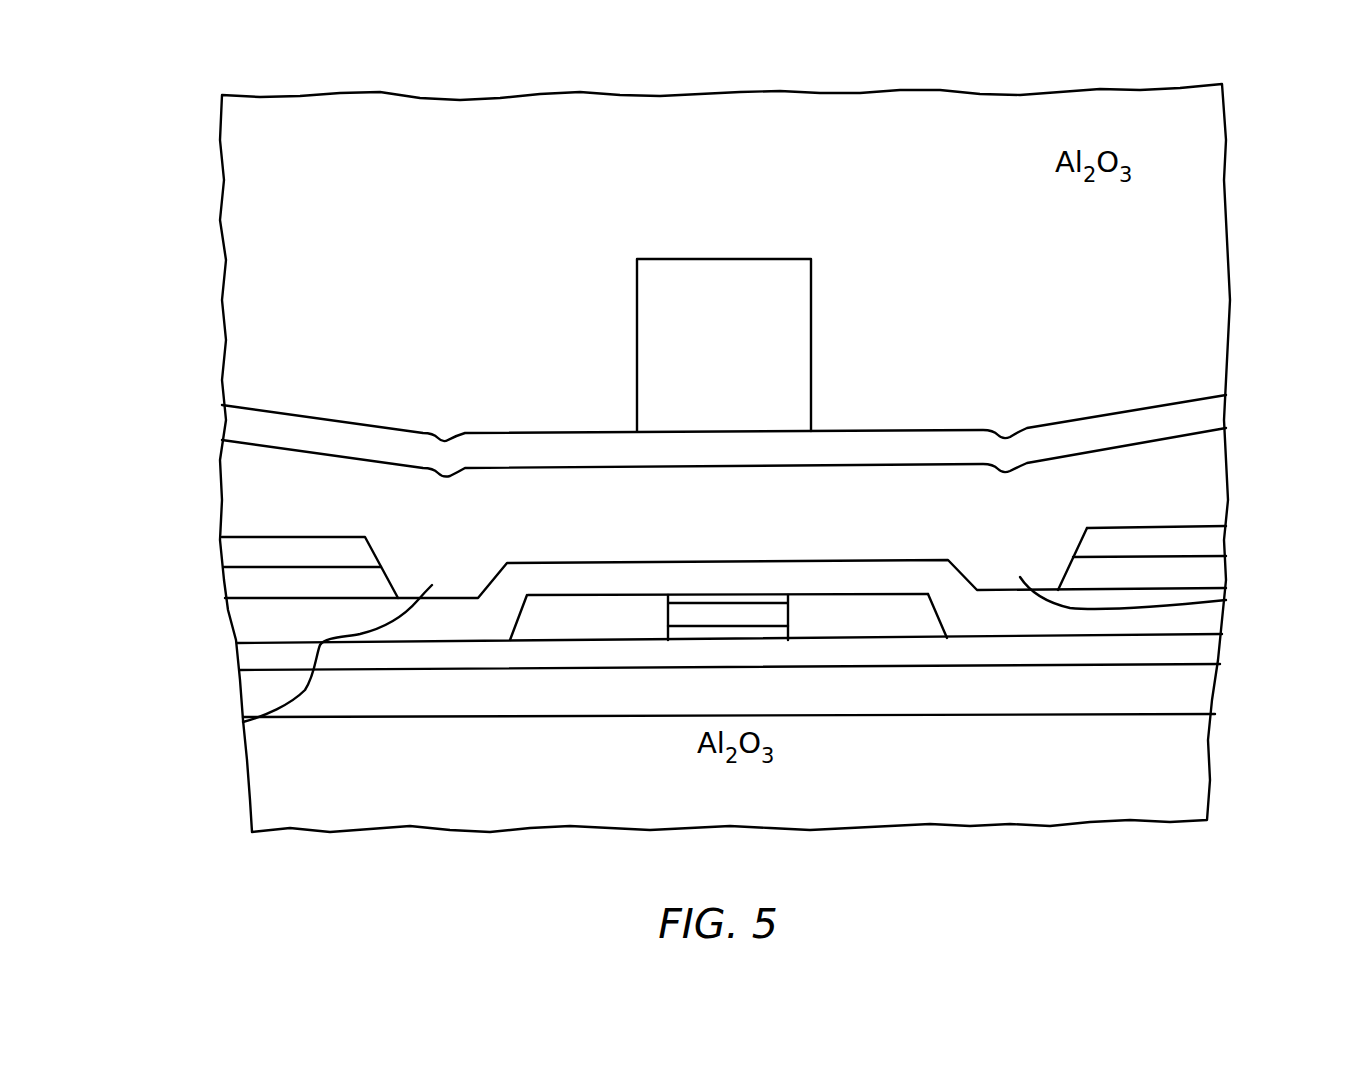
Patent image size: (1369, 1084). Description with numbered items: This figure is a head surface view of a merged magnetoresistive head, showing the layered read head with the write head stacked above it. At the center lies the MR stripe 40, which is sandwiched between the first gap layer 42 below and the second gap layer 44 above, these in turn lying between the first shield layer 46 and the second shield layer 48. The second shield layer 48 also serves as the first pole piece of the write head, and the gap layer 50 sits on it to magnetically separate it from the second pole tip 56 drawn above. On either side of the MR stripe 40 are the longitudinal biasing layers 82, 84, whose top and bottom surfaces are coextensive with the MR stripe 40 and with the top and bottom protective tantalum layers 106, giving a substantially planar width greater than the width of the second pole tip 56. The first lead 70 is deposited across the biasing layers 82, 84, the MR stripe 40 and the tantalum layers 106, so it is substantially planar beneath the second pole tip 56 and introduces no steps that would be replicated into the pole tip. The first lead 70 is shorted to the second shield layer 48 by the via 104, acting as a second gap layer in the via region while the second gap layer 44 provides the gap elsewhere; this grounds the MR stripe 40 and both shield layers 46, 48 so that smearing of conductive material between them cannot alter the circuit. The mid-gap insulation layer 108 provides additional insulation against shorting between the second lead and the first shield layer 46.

The MR stripe 40 is at (693, 620).
The first gap layer 42 is at (1173, 652).
The second gap layer 44 is at (238, 552).
The first shield layer 46 is at (1170, 690).
The second shield layer 48 is at (1177, 500).
The gap layer 50 is at (1205, 420).
The second pole tip 56 is at (775, 338).
The first lead 70 is at (585, 585).
The longitudinal biasing layer 82 is at (545, 615).
The longitudinal biasing layer 84 is at (837, 608).
The via 104 is at (243, 722).
The protective tantalum layers 106 is at (780, 598).
The mid-gap insulation layer 108 is at (238, 580).